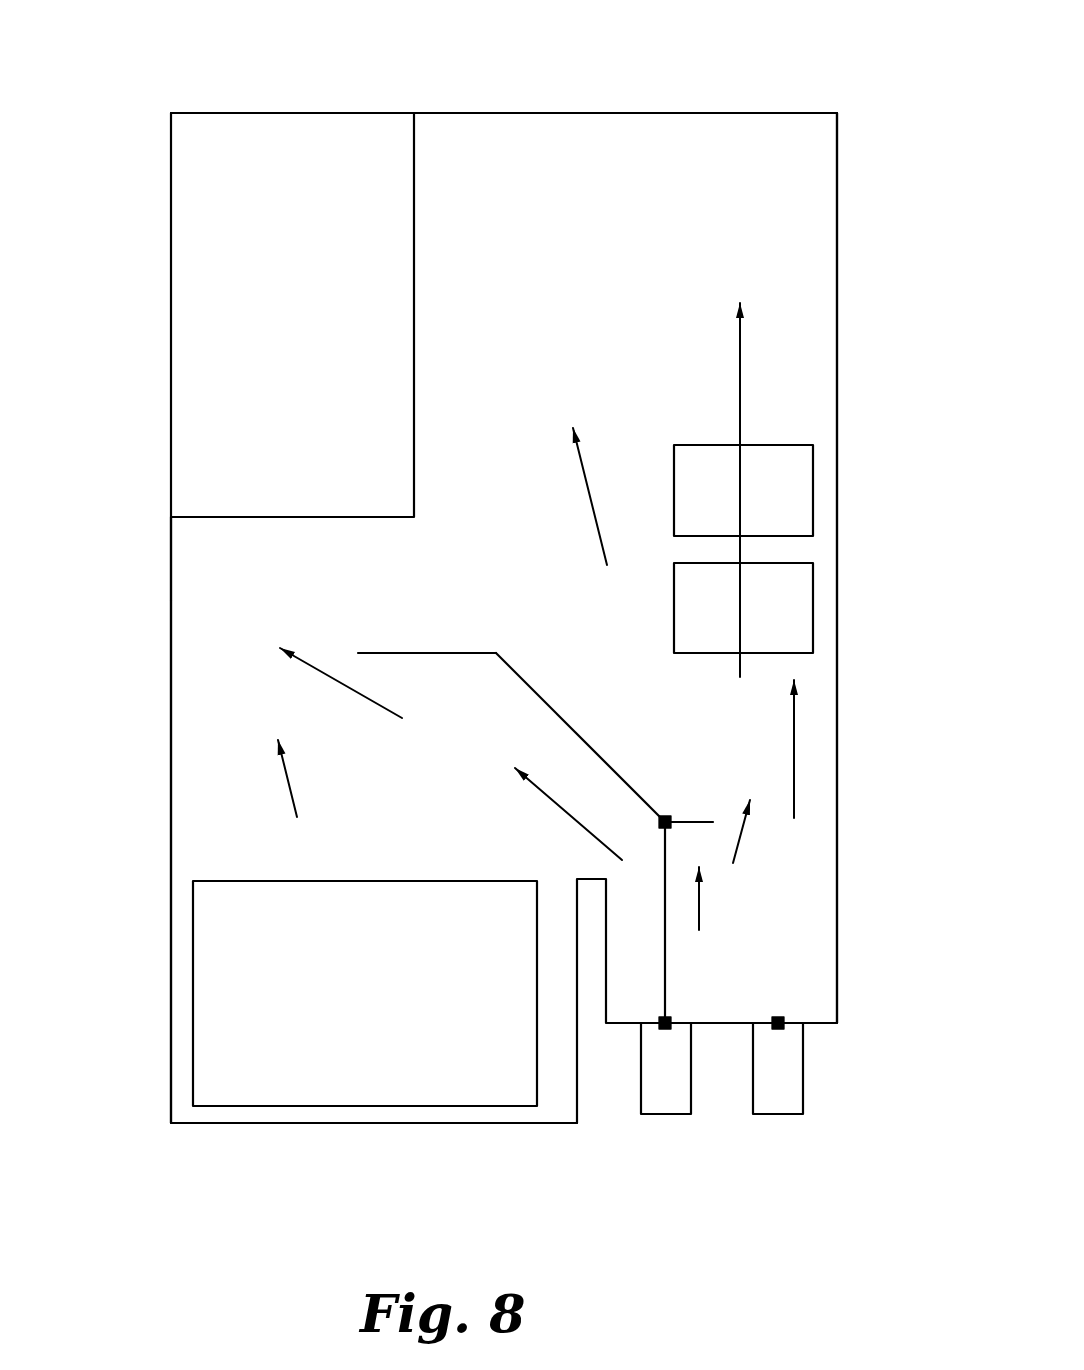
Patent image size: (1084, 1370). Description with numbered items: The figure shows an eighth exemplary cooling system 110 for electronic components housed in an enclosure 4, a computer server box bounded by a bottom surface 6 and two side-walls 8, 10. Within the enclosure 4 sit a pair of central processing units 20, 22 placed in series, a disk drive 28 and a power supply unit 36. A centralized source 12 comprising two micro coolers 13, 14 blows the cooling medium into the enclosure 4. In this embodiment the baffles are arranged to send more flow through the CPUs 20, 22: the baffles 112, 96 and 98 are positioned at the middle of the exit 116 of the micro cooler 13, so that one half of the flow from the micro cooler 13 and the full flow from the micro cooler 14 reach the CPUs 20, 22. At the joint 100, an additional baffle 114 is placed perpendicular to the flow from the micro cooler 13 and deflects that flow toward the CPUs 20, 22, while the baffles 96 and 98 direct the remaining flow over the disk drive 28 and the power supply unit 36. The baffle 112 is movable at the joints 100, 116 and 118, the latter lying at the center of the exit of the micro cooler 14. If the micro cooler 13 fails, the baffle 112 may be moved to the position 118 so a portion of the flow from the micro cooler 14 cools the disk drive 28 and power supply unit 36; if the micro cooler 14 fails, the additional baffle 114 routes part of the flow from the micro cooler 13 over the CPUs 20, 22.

The cooling system 110 is at (802, 72).
The enclosure 4 is at (617, 113).
The side-wall 8 is at (838, 238).
The power supply unit 36 is at (200, 390).
The bottom surface 6 is at (185, 558).
The side-wall 10 is at (171, 660).
The central processing unit 22 is at (790, 507).
The central processing unit 20 is at (783, 615).
The baffle 98 is at (430, 653).
The baffle 96 is at (567, 723).
The joint 100 is at (665, 814).
The additional baffle 114 is at (700, 822).
The baffle 112 is at (666, 978).
The joint 116 is at (668, 1030).
The joint 118 is at (780, 1030).
The micro cooler 13 is at (678, 1107).
The micro cooler 14 is at (785, 1104).
The centralized source 12 is at (733, 1126).
The disk drive 28 is at (257, 1082).